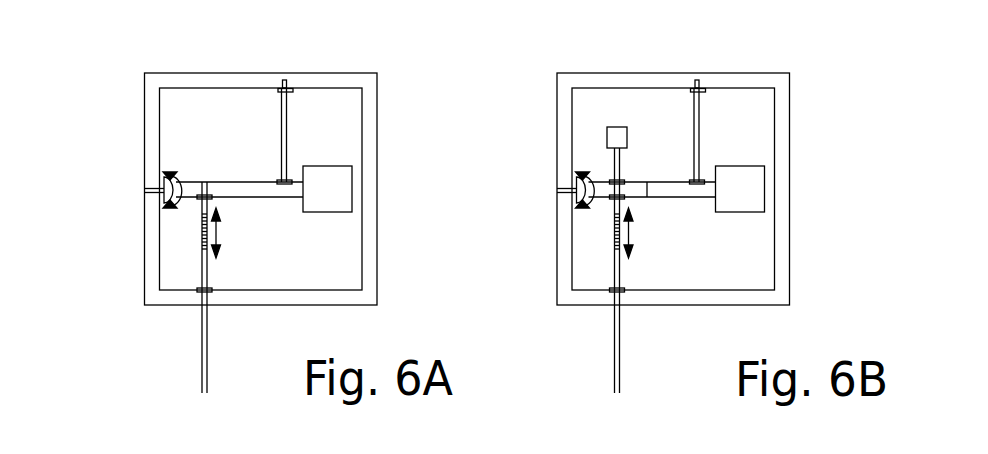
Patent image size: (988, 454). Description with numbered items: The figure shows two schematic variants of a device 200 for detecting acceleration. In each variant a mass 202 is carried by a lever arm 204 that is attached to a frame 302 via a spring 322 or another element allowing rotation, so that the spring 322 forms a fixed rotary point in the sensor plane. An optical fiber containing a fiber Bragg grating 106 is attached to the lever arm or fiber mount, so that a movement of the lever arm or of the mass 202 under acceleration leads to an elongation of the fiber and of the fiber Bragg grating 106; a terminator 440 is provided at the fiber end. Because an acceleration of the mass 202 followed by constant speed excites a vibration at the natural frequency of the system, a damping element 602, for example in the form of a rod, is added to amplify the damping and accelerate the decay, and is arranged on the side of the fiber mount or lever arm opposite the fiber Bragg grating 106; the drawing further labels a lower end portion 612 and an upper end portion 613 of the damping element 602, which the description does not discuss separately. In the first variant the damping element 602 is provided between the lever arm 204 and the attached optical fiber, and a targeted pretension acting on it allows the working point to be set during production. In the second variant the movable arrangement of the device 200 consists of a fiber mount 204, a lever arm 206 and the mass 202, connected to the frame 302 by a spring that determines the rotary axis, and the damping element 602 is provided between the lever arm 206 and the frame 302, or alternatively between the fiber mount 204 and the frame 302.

In FIG. 6A, the device for detecting acceleration 200 is at (258, 159).
In FIG. 6B, the device for detecting acceleration 200 is at (666, 159).
In FIG. 6A, the frame 302 is at (135, 145).
In FIG. 6B, the frame 302 is at (602, 189).
In FIG. 6A, the spring 322 is at (145, 200).
In FIG. 6B, the spring 322 is at (511, 198).
In FIG. 6A, the lever arm 204 is at (218, 188).
In FIG. 6B, the lever arm 204 is at (632, 160).
In FIG. 6B, the lever arm 206 is at (695, 160).
In FIG. 6A, the mass 202 is at (327, 189).
In FIG. 6B, the mass 202 is at (785, 198).
In FIG. 6A, the damping element 602 is at (318, 137).
In FIG. 6B, the damping element 602 is at (716, 136).
In FIG. 6A, the bearing flange 612 is at (279, 186).
In FIG. 6B, the bearing flange 612 is at (682, 222).
In FIG. 6A, the knob 613 is at (278, 87).
In FIG. 6B, the knob 613 is at (684, 48).
In FIG. 6B, the terminator 440 is at (602, 90).
In FIG. 6A, the fiber Bragg grating 106 is at (191, 232).
In FIG. 6B, the fiber Bragg grating 106 is at (563, 270).